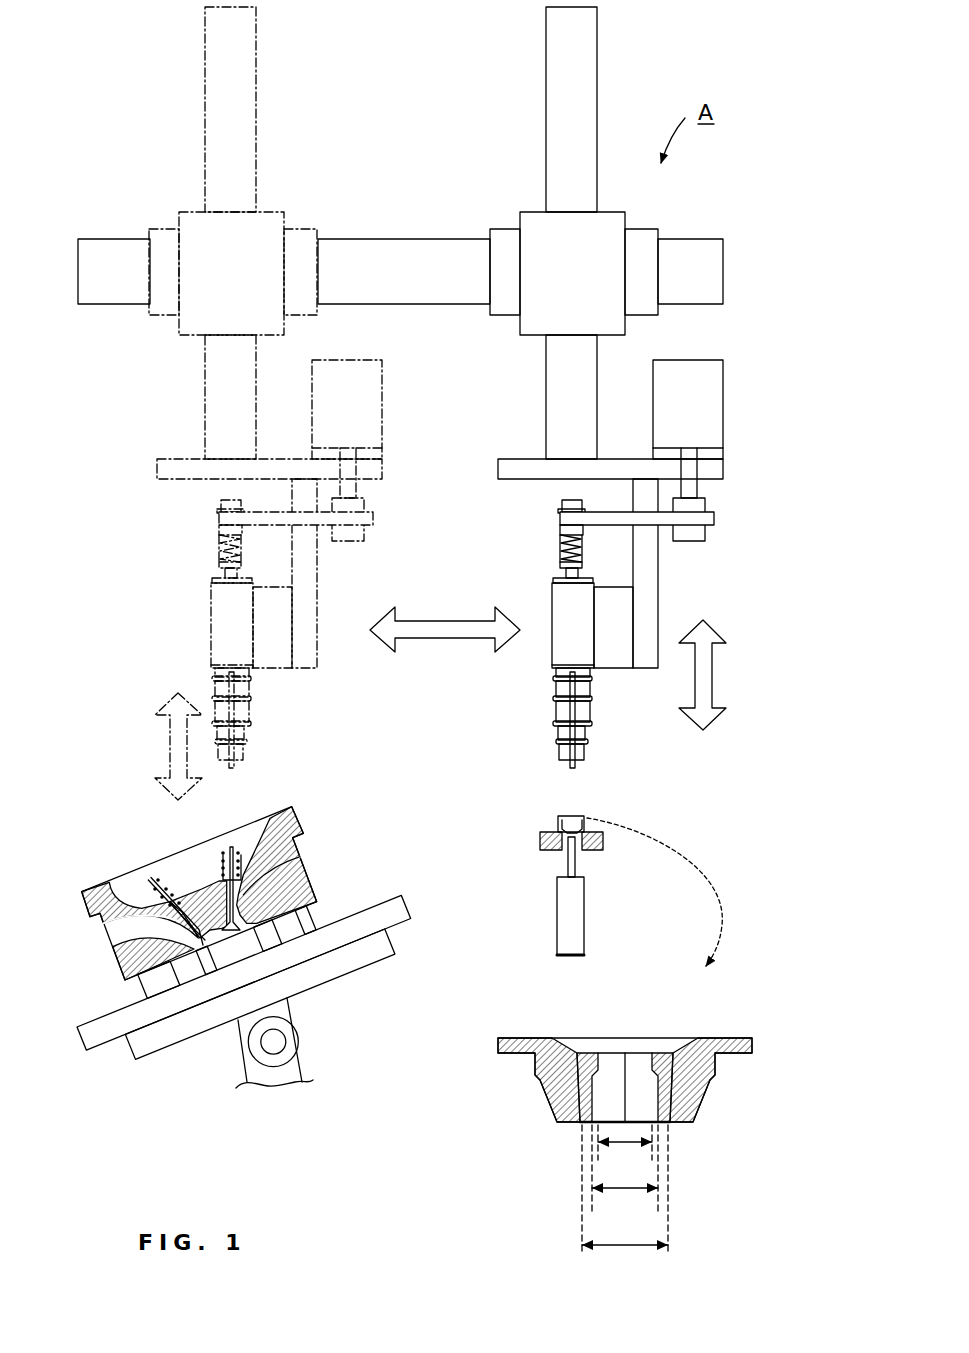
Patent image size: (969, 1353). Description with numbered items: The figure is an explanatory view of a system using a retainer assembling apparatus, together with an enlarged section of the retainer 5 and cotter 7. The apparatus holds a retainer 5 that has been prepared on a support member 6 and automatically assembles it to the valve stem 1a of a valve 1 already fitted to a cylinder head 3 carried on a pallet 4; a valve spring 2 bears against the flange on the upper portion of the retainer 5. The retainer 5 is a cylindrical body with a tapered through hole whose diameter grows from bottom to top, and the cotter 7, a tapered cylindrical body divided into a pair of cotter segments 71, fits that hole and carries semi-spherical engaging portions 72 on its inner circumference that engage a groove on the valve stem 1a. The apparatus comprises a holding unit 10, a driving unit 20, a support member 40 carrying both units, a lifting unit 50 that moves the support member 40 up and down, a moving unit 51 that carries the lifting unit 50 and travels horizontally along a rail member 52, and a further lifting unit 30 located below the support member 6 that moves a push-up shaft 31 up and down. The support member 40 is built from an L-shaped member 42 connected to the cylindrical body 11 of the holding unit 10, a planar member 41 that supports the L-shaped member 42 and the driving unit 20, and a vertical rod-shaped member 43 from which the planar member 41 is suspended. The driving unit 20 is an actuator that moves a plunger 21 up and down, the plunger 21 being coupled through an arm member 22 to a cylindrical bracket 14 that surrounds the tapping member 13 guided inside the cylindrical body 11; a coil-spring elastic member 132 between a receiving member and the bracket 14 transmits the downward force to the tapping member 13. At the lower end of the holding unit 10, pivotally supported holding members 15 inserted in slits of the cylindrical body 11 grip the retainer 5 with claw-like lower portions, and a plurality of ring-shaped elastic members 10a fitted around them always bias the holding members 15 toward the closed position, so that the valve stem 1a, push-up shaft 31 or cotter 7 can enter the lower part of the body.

The valve 1 is at (293, 858).
The valve stem 1a is at (148, 882).
The valve spring 2 is at (167, 880).
The cylinder head 3 is at (302, 810).
The pallet 4 is at (403, 897).
The retainer 5 is at (558, 818).
The support member 6 is at (540, 841).
The cotter 7 is at (628, 1044).
The holding unit 10 is at (531, 664).
The ring-shaped elastic members 10a is at (553, 684).
The cylindrical body 11 is at (590, 662).
The tapping member 13 is at (565, 572).
The bracket 14 is at (559, 528).
The holding members 15 is at (574, 750).
The driving unit 20 is at (723, 358).
The plunger 21 is at (698, 488).
The arm member 22 is at (560, 519).
The lifting unit 30 is at (547, 922).
The push-up shaft 31 is at (576, 860).
The support member 40 is at (501, 443).
The planar member 41 is at (502, 478).
The L-shaped member 42 is at (659, 612).
The rod-shaped member 43 is at (597, 54).
The lifting unit 50 is at (520, 333).
The moving unit 51 is at (500, 237).
The rail member 52 is at (421, 247).
The cotter segments 71 is at (577, 1100).
The engaging portions 72 is at (597, 1053).
The elastic member 132 is at (559, 549).